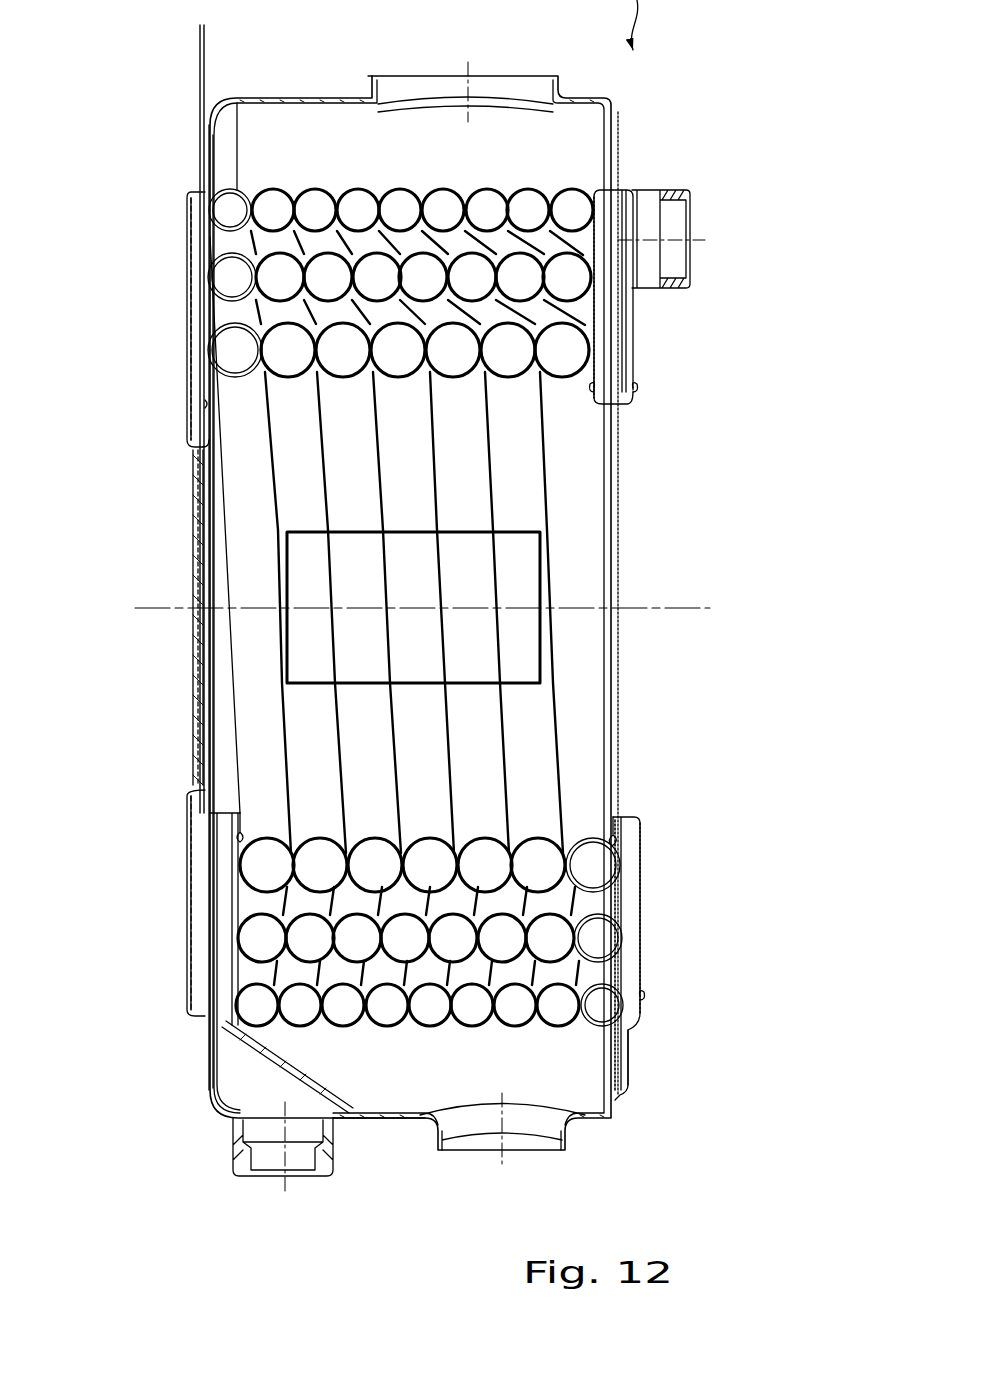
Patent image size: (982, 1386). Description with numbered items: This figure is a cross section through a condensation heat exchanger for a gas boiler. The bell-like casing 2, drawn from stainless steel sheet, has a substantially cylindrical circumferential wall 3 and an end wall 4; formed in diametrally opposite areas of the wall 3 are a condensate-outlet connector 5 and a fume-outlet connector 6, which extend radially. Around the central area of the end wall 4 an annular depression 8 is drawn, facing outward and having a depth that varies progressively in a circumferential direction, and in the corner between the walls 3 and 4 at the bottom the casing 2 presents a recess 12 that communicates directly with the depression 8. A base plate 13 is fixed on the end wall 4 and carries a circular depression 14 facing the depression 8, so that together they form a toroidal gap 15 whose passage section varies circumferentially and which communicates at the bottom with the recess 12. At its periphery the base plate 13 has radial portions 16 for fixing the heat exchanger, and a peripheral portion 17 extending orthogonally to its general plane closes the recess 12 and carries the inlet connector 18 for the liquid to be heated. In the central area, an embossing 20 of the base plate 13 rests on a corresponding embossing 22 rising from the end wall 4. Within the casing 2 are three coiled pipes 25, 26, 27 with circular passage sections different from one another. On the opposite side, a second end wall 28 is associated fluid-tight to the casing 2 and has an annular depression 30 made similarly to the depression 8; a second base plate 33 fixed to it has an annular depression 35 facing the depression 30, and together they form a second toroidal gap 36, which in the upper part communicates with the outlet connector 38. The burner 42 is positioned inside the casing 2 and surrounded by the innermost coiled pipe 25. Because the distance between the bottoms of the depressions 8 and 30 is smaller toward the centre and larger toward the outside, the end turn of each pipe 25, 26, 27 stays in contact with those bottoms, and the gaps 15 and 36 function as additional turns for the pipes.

The casing 2 is at (322, 96).
The circumferential wall 3 is at (292, 98).
The end wall 4 is at (212, 135).
The condensate-outlet connector 5 is at (478, 1160).
The fume-outlet connector 6 is at (500, 78).
The annular depression 8 is at (205, 402).
The recess 12 is at (248, 1080).
The base plate 13 is at (182, 190).
The circular depression 14 is at (200, 208).
The toroidal gap 15 is at (200, 348).
The radial portions 16 is at (200, 48).
The peripheral portion 17 is at (350, 1140).
The inlet connector 18 is at (245, 1165).
The embossing 20 is at (200, 565).
The embossing 22 is at (162, 617).
The coiled pipe 25 is at (344, 378).
The coiled pipe 26 is at (362, 255).
The coiled pipe 27 is at (490, 190).
The second end wall 28 is at (632, 1080).
The annular depression 30 is at (595, 380).
The second base plate 33 is at (642, 822).
The annular depression 35 is at (634, 392).
The toroidal gap 36 is at (618, 330).
The outlet connector 38 is at (668, 192).
The burner 42 is at (413, 607).